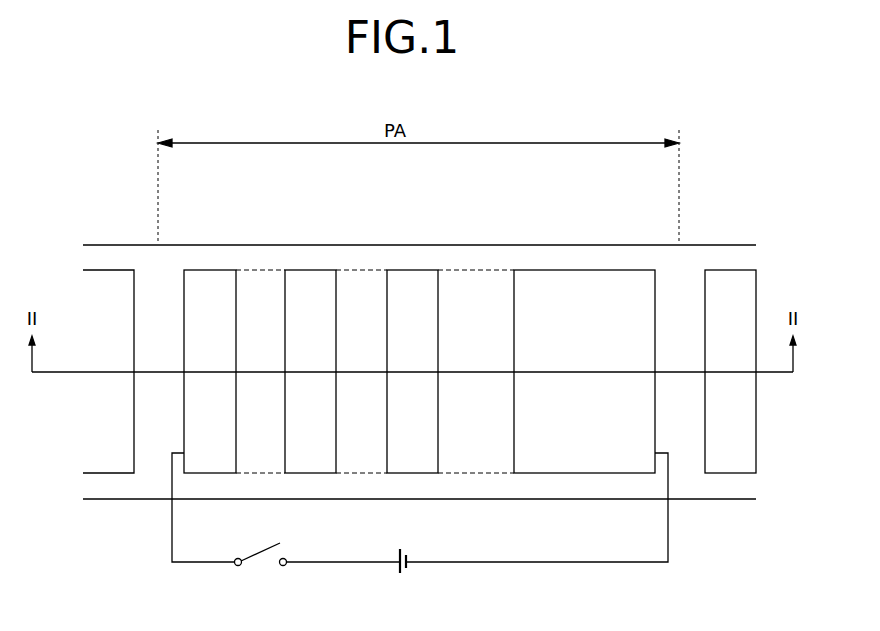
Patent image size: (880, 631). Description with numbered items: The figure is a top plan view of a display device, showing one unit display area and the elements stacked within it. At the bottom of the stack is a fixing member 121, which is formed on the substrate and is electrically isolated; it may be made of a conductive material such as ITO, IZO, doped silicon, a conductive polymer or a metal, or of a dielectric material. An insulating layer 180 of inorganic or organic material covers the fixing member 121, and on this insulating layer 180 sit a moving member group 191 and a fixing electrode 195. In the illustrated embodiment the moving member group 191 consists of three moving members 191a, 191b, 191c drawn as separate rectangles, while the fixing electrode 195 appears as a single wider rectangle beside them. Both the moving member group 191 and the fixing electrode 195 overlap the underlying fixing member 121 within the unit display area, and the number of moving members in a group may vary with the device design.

The insulating layer 180 is at (113, 483).
The fixing member 121 is at (485, 268).
The moving member group 191 is at (316, 315).
The moving member 191a is at (211, 270).
The moving member 191b is at (310, 270).
The moving member 191c is at (418, 339).
The fixing electrode 195 is at (576, 450).